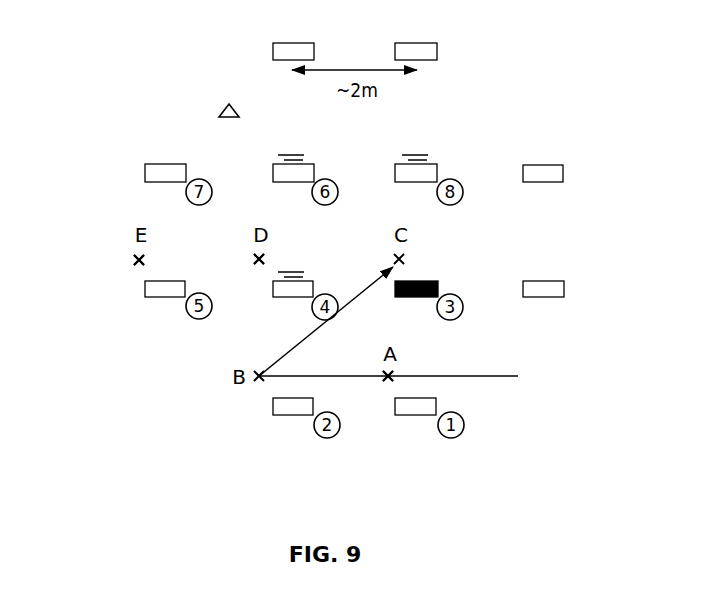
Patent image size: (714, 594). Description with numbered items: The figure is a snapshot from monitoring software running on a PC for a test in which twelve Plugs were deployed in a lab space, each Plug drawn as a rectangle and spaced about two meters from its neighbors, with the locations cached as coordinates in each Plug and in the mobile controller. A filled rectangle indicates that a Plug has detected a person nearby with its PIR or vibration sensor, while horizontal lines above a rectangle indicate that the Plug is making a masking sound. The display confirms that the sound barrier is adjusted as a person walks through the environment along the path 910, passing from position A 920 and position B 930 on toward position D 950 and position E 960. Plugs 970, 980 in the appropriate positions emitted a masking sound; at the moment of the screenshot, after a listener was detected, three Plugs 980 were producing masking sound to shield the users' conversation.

The path 910 is at (505, 376).
The position A 920 is at (393, 370).
The position B 930 is at (259, 376).
The position D 950 is at (265, 258).
The position E 960 is at (133, 261).
The Plugs 970 is at (153, 298).
The Plugs 980 is at (314, 172).